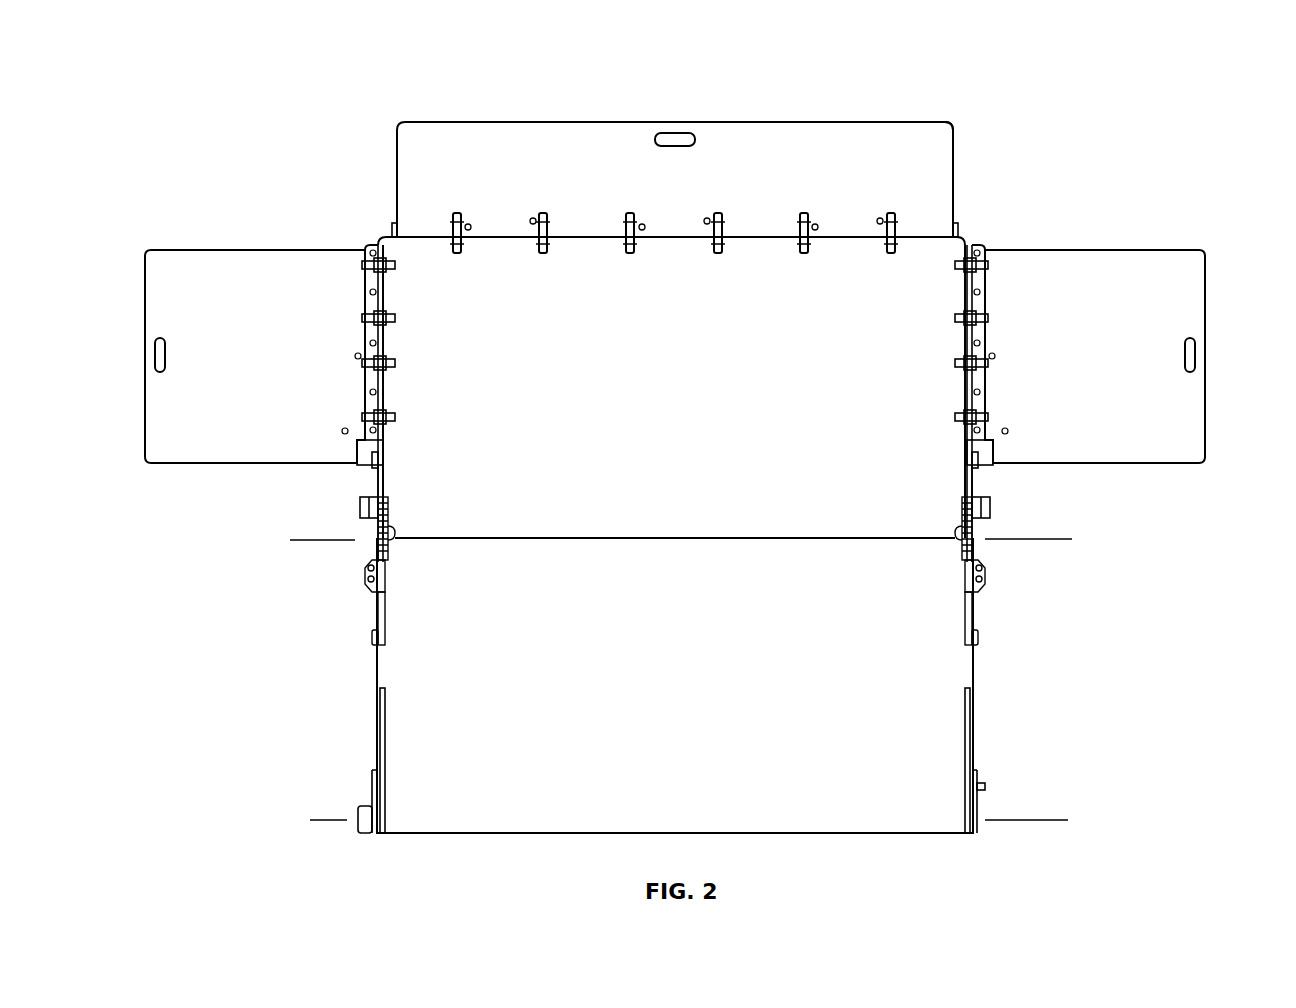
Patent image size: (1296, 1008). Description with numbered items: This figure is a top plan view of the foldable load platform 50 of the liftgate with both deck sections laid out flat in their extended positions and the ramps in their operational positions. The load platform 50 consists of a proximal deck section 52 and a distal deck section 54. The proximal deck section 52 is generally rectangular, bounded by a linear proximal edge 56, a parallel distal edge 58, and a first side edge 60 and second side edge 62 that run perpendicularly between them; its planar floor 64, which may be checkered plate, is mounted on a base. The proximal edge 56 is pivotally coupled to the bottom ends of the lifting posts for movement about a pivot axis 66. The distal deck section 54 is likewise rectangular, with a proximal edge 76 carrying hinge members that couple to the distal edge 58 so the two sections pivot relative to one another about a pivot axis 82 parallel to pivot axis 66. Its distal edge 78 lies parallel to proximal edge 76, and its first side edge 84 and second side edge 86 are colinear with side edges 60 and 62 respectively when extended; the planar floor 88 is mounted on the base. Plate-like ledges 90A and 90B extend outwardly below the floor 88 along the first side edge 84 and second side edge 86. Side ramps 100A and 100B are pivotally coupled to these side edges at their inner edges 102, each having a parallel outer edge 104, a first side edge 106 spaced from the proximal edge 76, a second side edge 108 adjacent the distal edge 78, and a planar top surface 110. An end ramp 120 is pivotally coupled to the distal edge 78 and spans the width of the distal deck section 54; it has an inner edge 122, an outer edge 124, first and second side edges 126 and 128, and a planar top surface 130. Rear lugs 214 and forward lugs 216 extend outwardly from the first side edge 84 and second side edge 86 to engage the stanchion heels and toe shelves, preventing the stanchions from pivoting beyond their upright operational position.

The load platform 50 is at (978, 662).
The proximal deck section 52 is at (940, 743).
The distal deck section 54 is at (932, 483).
The proximal edge 56 is at (775, 836).
The distal edge 58 is at (797, 538).
The first side edge 60 is at (977, 678).
The second side edge 62 is at (377, 668).
The floor 64 is at (771, 712).
The pivot axis 66 is at (1035, 820).
The proximal edge 76 is at (685, 540).
The distal edge 78 is at (762, 237).
The pivot axis 82 is at (1040, 540).
The first side edge 84 is at (975, 472).
The second side edge 86 is at (378, 482).
The floor 88 is at (757, 393).
The ledge 90A is at (980, 400).
The ledge 90B is at (372, 400).
The side ramp 100A is at (1103, 250).
The side ramp 100B is at (259, 243).
The inner edge 102 is at (385, 330).
The outer edge 104 is at (145, 425).
The first side edge 106 is at (232, 463).
The second side edge 108 is at (281, 250).
The top surface 110 is at (170, 308).
The end ramp 120 is at (818, 118).
The inner edge 122 is at (668, 240).
The outer edge 124 is at (617, 120).
The first side edge 126 is at (955, 165).
The second side edge 128 is at (397, 152).
The top surface 130 is at (888, 140).
The rear lug 214 is at (364, 510).
The forward lug 216 is at (365, 456).